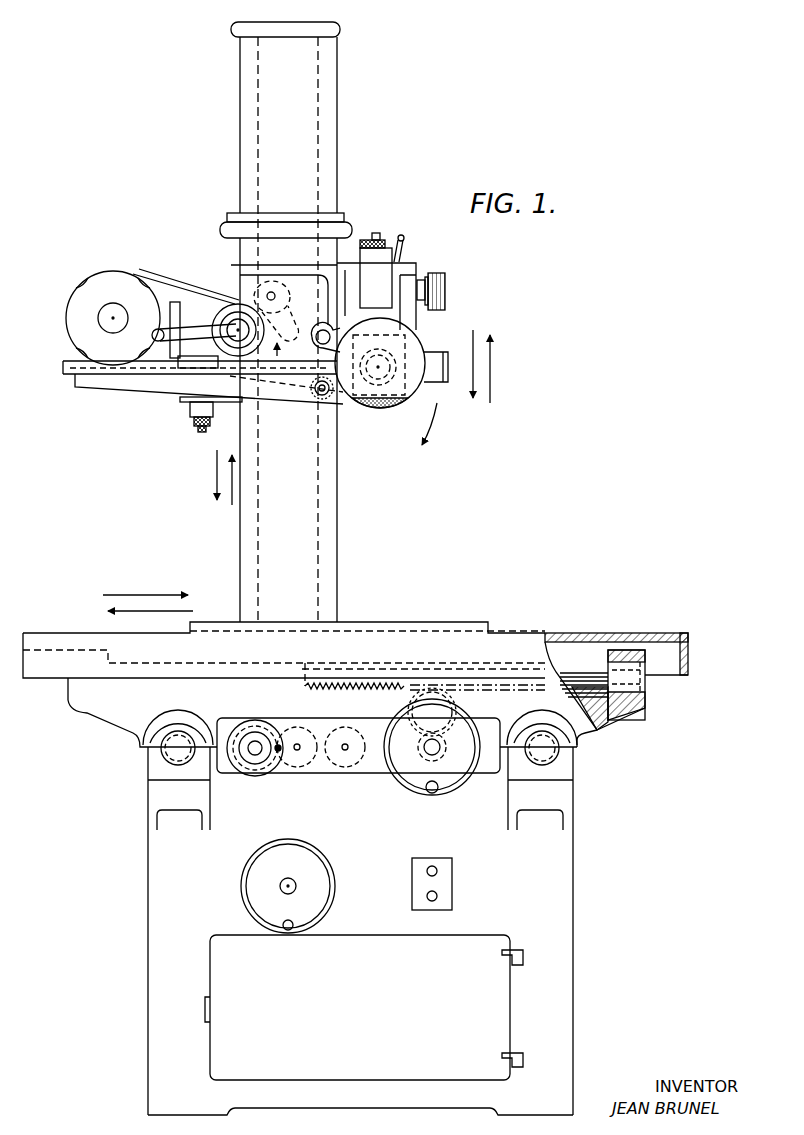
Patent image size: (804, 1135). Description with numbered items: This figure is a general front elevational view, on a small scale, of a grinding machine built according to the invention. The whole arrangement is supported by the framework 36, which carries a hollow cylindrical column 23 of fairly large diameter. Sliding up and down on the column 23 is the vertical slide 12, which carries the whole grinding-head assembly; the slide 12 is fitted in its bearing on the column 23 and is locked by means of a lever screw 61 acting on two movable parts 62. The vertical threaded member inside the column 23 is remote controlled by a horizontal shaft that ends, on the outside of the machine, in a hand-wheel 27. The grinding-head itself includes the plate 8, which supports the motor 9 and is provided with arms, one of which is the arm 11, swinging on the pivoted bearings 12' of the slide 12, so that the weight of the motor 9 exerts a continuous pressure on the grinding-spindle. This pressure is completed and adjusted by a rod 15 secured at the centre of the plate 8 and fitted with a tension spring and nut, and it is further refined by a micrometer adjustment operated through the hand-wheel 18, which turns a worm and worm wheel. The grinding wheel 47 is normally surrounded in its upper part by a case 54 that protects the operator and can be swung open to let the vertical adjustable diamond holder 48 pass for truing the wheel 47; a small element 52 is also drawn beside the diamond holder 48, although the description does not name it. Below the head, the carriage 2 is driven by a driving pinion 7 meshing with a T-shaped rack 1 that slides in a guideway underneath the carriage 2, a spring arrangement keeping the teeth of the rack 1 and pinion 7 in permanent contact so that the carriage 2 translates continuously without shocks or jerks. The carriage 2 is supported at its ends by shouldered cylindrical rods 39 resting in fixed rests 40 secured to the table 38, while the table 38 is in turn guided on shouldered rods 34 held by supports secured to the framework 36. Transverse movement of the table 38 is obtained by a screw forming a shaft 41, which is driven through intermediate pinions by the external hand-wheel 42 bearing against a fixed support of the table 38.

The rack 1 is at (305, 692).
The carriage 2 is at (330, 650).
The driving pinion 7 is at (458, 700).
The plate 8 is at (120, 362).
The motor 9 is at (114, 292).
The arm 11 is at (290, 388).
The vertical slide 12 is at (323, 281).
The pivoted bearings 12' is at (340, 406).
The rod 15 is at (190, 426).
The hand-wheel 18 is at (445, 285).
The cylindrical column 23 is at (312, 90).
The hand-wheel 27 is at (305, 873).
The rods 34 is at (170, 752).
The framework 36 is at (545, 878).
The table 38 is at (630, 710).
The cylindrical rods 39 is at (593, 693).
The fixed rests 40 is at (645, 698).
The screw forming a shaft 41 is at (345, 752).
The external hand-wheel 42 is at (258, 762).
The wheel 47 is at (395, 405).
The diamond holder 48 is at (380, 283).
The locking lever 52 is at (404, 245).
The case 54 is at (410, 345).
The lever screw 61 is at (188, 332).
The movable parts 62 is at (227, 308).